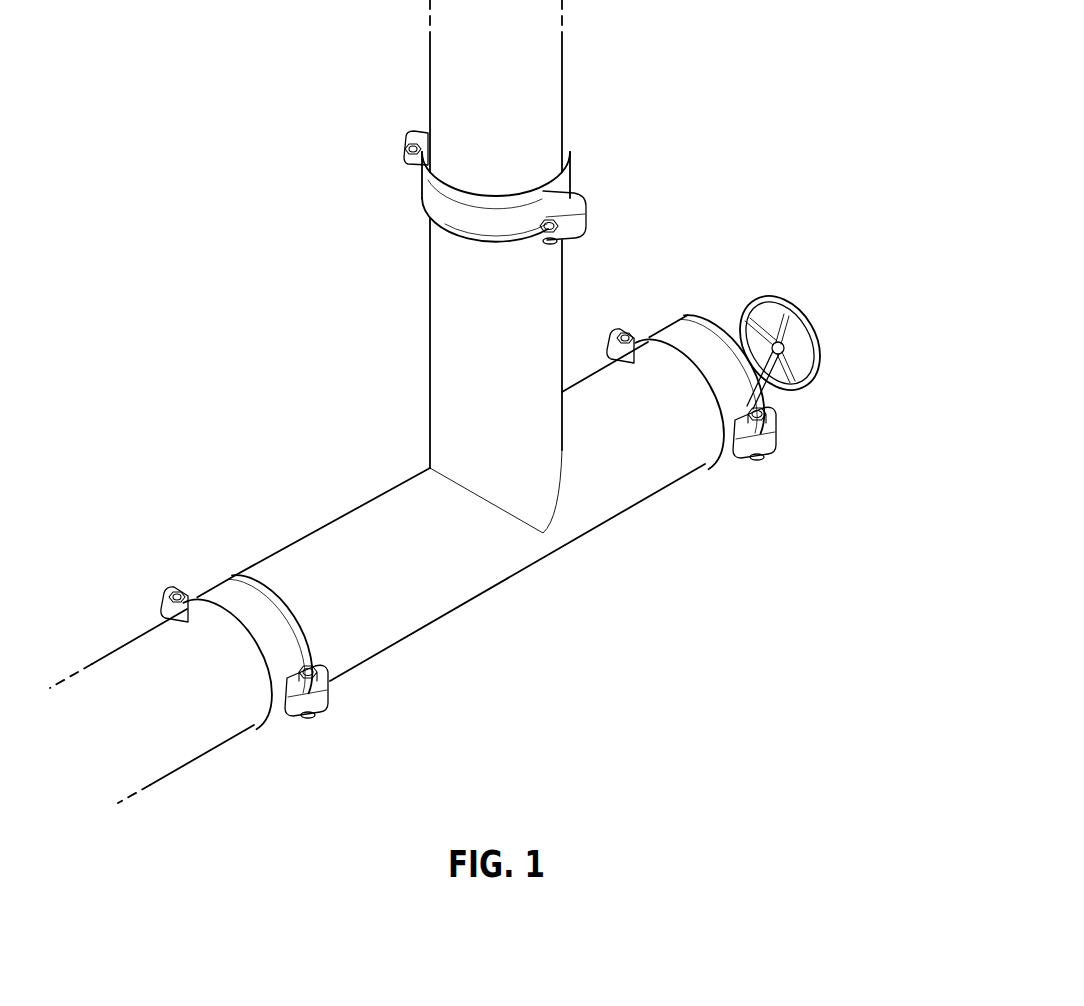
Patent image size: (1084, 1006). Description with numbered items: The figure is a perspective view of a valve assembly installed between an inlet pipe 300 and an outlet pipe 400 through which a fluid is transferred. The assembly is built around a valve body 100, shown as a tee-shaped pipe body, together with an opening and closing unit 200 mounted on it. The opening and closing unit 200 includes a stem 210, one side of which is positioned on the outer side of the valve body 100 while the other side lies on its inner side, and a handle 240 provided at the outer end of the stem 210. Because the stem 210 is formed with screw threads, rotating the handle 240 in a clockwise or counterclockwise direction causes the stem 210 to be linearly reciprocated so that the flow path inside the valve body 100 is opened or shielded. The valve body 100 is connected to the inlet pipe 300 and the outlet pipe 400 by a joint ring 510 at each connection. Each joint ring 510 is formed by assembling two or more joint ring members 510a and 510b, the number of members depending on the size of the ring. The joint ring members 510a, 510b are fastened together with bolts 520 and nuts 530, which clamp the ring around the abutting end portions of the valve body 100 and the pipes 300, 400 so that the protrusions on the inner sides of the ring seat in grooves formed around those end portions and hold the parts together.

The valve body 100 is at (495, 572).
The opening and closing unit 200 is at (837, 345).
The stem 210 is at (783, 351).
The handle 240 is at (805, 328).
The inlet pipe 300 is at (193, 750).
The outlet pipe 400 is at (556, 77).
The joint ring 510 is at (425, 439).
The joint ring member 510a is at (518, 202).
The joint ring member 510b is at (568, 170).
The bolt 520 is at (410, 165).
The nut 530 is at (408, 148).